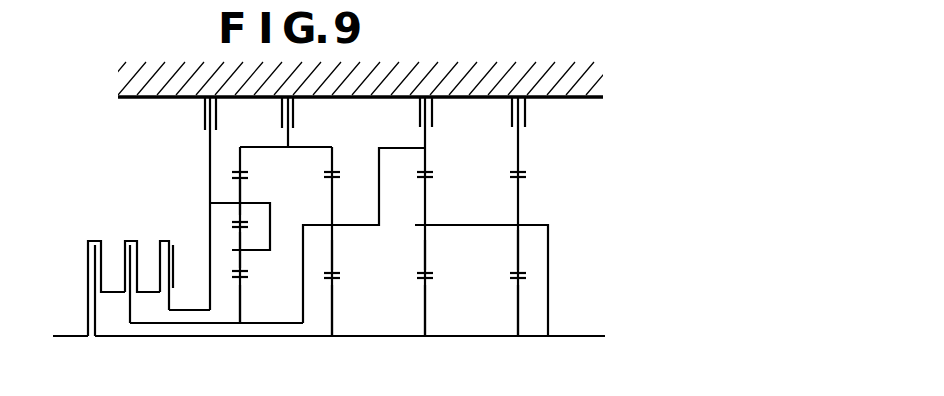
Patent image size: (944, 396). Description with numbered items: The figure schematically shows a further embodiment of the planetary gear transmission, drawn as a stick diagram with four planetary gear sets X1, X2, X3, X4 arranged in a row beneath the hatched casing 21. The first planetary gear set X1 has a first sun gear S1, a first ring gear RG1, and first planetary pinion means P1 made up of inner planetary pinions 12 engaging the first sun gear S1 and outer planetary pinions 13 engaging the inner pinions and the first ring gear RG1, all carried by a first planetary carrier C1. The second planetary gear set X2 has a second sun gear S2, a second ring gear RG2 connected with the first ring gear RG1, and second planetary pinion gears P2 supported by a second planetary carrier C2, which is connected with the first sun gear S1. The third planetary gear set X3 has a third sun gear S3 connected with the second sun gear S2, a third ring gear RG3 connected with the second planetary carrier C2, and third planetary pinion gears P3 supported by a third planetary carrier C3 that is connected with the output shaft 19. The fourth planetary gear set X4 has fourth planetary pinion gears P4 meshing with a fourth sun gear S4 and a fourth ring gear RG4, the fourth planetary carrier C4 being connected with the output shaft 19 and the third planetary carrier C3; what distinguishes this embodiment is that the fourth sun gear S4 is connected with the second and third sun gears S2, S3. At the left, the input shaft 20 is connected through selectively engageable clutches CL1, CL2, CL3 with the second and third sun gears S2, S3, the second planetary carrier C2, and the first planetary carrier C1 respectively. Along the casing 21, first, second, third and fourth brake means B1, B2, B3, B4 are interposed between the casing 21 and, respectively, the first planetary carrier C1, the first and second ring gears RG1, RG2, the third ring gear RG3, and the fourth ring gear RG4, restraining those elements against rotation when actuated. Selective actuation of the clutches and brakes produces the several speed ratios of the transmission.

The casing 21 is at (126, 97).
The first brake means B1 is at (203, 118).
The second brake means B2 is at (281, 118).
The third brake means B3 is at (419, 116).
The fourth brake means B4 is at (527, 118).
The first ring gear RG1 is at (240, 155).
The second ring gear RG2 is at (334, 160).
The third ring gear RG3 is at (427, 158).
The fourth ring gear RG4 is at (521, 158).
The outer planetary pinions 13 is at (240, 190).
The inner planetary pinions 12 is at (248, 262).
The first planetary carrier C1 is at (268, 210).
The second planetary carrier C2 is at (348, 225).
The third planetary carrier C3 is at (450, 225).
The fourth planetary carrier C4 is at (537, 225).
The first planetary pinion means P1 is at (231, 238).
The second planetary pinion gears P2 is at (334, 247).
The third planetary pinion gears P3 is at (428, 247).
The fourth planetary pinion gears P4 is at (514, 214).
The first sun gear S1 is at (243, 301).
The second sun gear S2 is at (335, 308).
The third sun gear S3 is at (428, 308).
The fourth sun gear S4 is at (520, 308).
The first clutch means CL1 is at (95, 240).
The second clutch means CL2 is at (130, 240).
The third clutch means CL3 is at (172, 228).
The input shaft 20 is at (67, 337).
The output shaft 19 is at (578, 338).
The first planetary gear set X1 is at (230, 295).
The second planetary gear set X2 is at (325, 297).
The third planetary gear set X3 is at (417, 297).
The fourth planetary gear set X4 is at (513, 297).